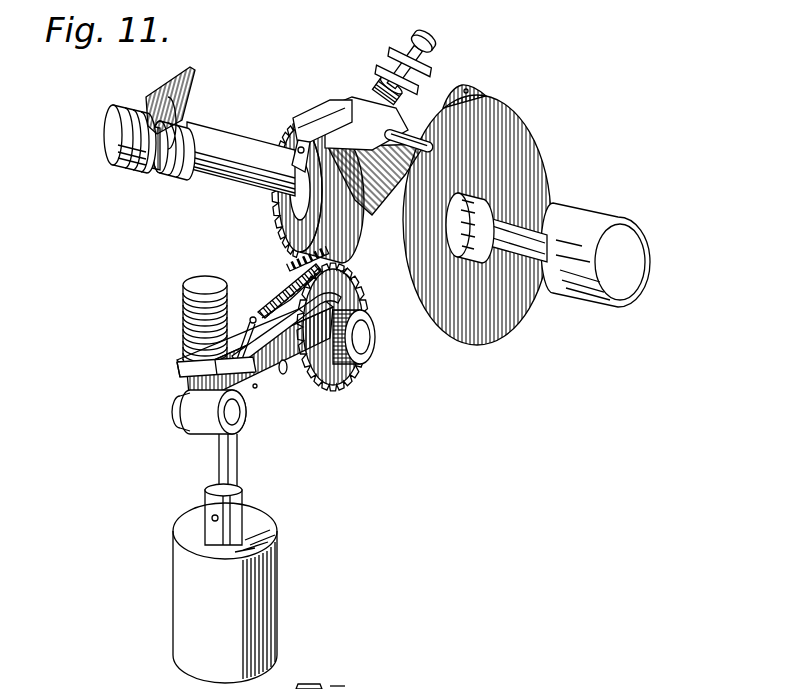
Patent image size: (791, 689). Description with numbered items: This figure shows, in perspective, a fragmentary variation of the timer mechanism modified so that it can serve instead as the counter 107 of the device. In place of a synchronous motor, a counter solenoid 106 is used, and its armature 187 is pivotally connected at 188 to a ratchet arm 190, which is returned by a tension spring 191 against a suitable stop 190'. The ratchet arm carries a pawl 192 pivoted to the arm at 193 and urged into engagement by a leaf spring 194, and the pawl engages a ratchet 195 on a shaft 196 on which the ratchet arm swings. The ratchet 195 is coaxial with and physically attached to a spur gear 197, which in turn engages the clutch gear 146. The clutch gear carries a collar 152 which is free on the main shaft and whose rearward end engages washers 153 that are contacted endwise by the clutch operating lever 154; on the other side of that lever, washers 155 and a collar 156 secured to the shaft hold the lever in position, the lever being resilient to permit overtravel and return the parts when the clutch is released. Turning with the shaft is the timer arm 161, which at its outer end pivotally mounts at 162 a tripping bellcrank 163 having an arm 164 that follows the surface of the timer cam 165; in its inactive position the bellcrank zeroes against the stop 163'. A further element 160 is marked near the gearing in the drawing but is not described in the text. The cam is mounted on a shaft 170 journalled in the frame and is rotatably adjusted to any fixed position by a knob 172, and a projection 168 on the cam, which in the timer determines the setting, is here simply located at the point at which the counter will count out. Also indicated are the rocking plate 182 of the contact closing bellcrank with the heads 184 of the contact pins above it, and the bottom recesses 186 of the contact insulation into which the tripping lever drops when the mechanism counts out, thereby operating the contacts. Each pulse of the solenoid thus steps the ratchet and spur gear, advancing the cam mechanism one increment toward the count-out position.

The counter solenoid 106 is at (277, 583).
The counter 107 is at (342, 385).
The clutch gear 146 is at (280, 218).
The collar 152 is at (227, 133).
The washers 153 is at (173, 173).
The clutch operating lever 154 is at (197, 82).
The washers 155 is at (143, 161).
The collar 156 is at (115, 148).
The pinion 160 is at (351, 277).
The timer arm 161 is at (293, 110).
The pivot 162 is at (300, 127).
The tripping bellcrank 163 is at (411, 125).
The stop 163' is at (386, 66).
The arm 164 is at (375, 156).
The timer cam 165 is at (533, 150).
The projection 168 is at (477, 90).
The shaft 170 is at (533, 227).
The knob 172 is at (600, 213).
The rocking plate 182 is at (307, 687).
The heads 184 is at (355, 681).
The bottom recesses 186 is at (530, 678).
The armature 187 is at (240, 488).
The pivotal connection 188 is at (240, 435).
The ratchet arm 190 is at (255, 363).
The stop 190' is at (187, 384).
The tension spring 191 is at (187, 347).
The pawl 192 is at (273, 287).
The pivot 193 is at (303, 380).
The leaf spring 194 is at (247, 347).
The ratchet 195 is at (357, 293).
The shaft 196 is at (365, 360).
The spur gear 197 is at (290, 255).